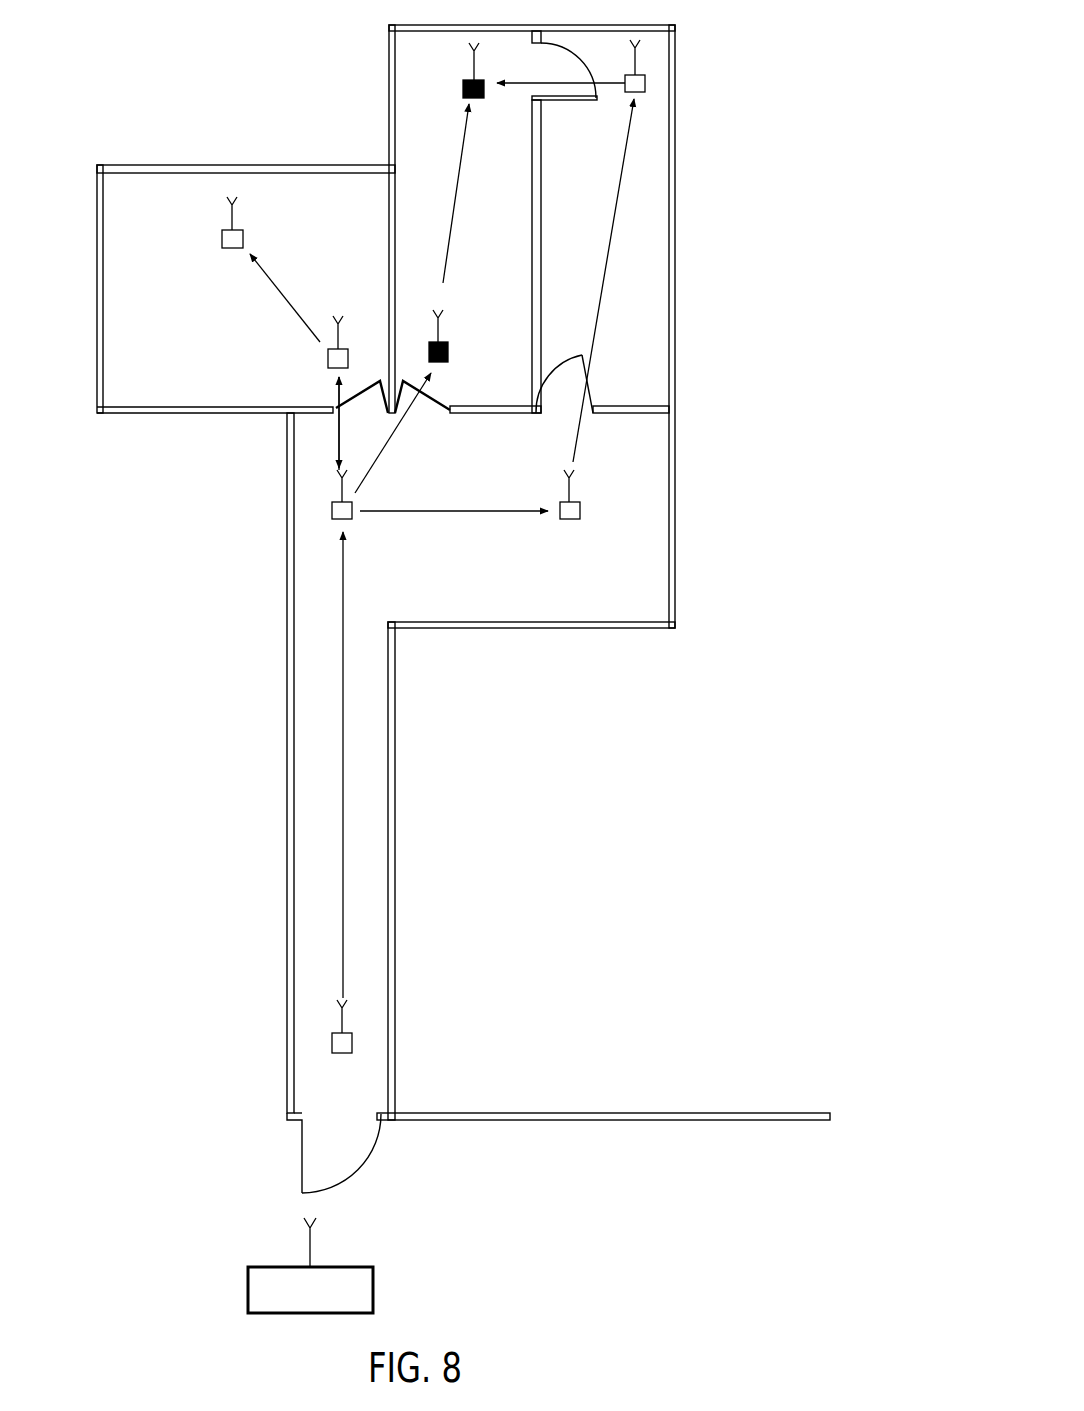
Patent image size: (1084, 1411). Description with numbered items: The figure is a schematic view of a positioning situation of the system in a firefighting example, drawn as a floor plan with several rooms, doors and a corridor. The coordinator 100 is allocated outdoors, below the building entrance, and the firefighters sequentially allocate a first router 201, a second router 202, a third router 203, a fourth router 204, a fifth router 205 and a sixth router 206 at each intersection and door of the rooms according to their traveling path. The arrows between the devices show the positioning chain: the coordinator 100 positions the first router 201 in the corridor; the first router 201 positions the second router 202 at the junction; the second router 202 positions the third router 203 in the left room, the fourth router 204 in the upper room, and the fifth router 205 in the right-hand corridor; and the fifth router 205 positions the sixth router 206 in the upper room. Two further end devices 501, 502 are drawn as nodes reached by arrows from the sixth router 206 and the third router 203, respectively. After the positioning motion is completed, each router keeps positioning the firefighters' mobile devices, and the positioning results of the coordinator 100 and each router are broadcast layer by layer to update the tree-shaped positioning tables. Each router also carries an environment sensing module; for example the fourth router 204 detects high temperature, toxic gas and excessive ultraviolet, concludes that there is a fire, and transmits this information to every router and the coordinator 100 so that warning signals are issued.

The coordinator 100 is at (373, 1288).
The first router 201 is at (352, 1043).
The second router 202 is at (332, 508).
The third router 203 is at (328, 358).
The fourth router 204 is at (448, 348).
The fifth router 205 is at (580, 519).
The sixth router 206 is at (645, 83).
The end device 501 is at (463, 86).
The end device 502 is at (222, 240).